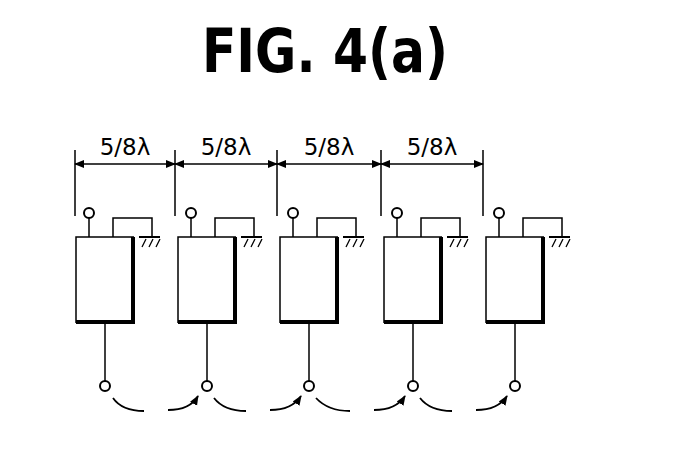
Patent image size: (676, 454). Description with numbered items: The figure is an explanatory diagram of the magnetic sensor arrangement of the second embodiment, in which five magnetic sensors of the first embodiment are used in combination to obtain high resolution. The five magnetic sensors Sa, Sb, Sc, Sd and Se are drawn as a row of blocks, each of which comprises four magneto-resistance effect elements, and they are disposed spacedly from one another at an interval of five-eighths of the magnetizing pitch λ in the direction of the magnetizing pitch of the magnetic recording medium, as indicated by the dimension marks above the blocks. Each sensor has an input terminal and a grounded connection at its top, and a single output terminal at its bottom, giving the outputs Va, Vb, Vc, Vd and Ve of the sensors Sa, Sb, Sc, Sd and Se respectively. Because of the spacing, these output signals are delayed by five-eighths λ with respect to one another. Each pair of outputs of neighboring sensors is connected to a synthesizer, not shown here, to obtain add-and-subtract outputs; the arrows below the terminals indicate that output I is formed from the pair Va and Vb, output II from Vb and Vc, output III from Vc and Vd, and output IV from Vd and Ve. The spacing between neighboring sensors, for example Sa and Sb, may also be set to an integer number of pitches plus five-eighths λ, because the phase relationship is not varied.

The magnetic sensor Sa is at (118, 265).
The magnetic sensor Sb is at (220, 265).
The magnetic sensor Sc is at (322, 265).
The magnetic sensor Sd is at (426, 265).
The magnetic sensor Se is at (528, 265).
The output Va is at (120, 357).
The output Vb is at (222, 357).
The output Vc is at (324, 357).
The output Vd is at (428, 357).
The output Ve is at (530, 357).
The add-and-subtract output I is at (160, 422).
The add-and-subtract output II is at (266, 422).
The add-and-subtract output III is at (373, 422).
The add-and-subtract output IV is at (472, 402).